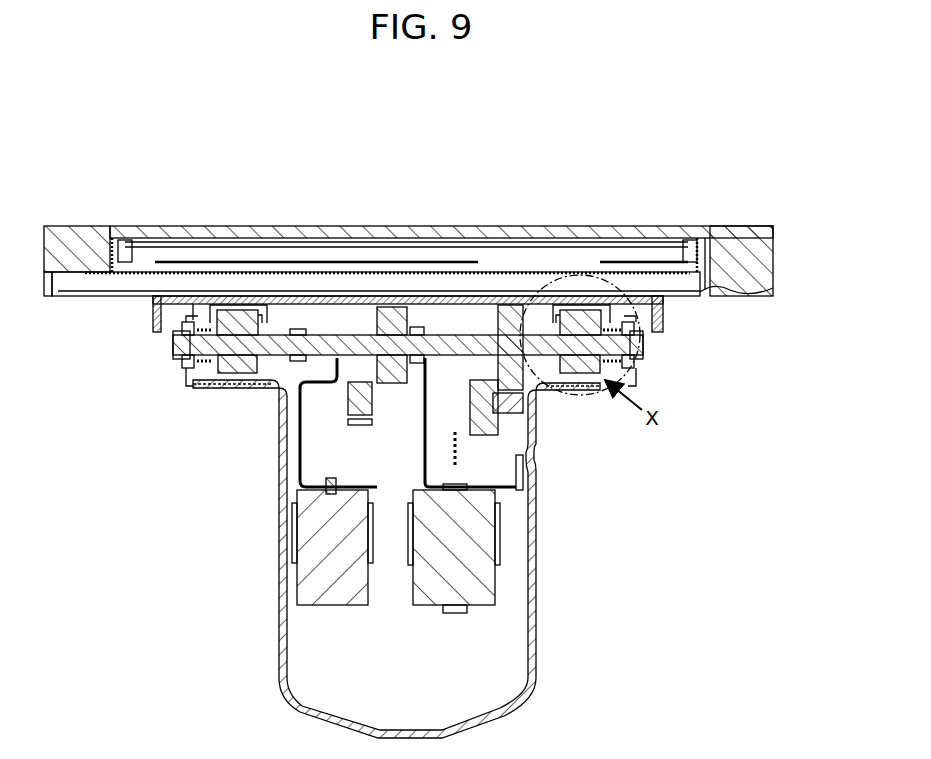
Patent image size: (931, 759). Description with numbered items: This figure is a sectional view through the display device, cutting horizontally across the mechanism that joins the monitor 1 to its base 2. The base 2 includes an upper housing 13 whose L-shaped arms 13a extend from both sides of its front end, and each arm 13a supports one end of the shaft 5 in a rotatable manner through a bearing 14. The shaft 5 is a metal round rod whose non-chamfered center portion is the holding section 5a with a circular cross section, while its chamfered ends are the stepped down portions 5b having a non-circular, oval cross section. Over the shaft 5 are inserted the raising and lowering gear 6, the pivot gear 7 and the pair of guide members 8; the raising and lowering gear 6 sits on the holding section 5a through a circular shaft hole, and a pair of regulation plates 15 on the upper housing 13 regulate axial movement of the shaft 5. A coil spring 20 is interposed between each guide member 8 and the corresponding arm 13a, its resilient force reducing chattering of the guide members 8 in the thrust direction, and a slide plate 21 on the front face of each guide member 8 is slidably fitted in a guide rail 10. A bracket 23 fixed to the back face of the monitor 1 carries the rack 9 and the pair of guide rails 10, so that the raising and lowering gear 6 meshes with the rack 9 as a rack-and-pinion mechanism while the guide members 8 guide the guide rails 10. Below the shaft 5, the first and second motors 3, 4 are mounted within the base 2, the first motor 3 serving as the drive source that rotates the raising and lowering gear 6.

The monitor 1 is at (770, 228).
The base 2 is at (415, 559).
The first motor 3 is at (320, 596).
The second motor 4 is at (480, 596).
The shaft 5 is at (460, 335).
The holding section 5a is at (296, 329).
The stepped down portions 5b is at (186, 370).
The raising and lowering gear 6 is at (392, 307).
The pivot gear 7 is at (505, 305).
The guide members 8 is at (235, 373).
The rack 9 is at (357, 296).
The guide rails 10 is at (265, 305).
The upper housing 13 is at (540, 688).
The arms 13a is at (225, 388).
The bearing 14 is at (186, 362).
The regulation plates 15 is at (300, 440).
The coil spring 20 is at (200, 328).
The slide plate 21 is at (235, 318).
The bracket 23 is at (153, 318).